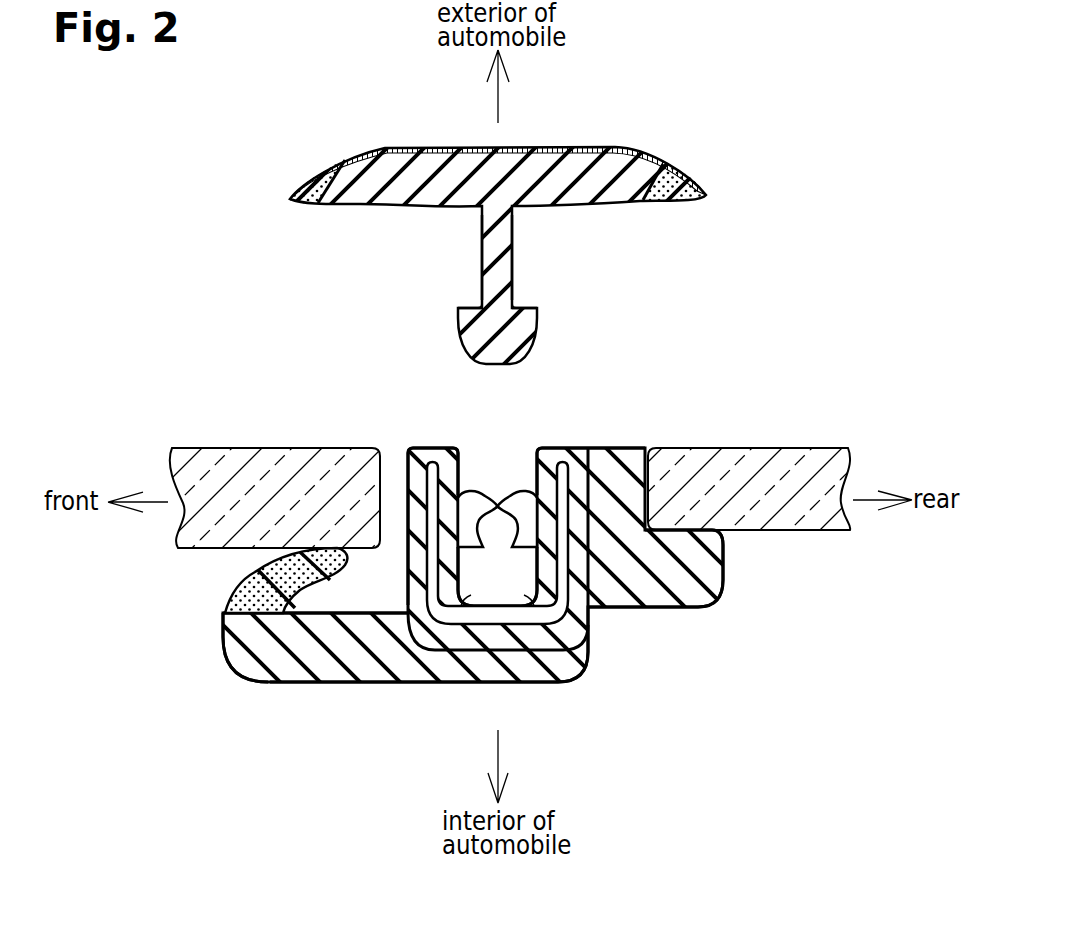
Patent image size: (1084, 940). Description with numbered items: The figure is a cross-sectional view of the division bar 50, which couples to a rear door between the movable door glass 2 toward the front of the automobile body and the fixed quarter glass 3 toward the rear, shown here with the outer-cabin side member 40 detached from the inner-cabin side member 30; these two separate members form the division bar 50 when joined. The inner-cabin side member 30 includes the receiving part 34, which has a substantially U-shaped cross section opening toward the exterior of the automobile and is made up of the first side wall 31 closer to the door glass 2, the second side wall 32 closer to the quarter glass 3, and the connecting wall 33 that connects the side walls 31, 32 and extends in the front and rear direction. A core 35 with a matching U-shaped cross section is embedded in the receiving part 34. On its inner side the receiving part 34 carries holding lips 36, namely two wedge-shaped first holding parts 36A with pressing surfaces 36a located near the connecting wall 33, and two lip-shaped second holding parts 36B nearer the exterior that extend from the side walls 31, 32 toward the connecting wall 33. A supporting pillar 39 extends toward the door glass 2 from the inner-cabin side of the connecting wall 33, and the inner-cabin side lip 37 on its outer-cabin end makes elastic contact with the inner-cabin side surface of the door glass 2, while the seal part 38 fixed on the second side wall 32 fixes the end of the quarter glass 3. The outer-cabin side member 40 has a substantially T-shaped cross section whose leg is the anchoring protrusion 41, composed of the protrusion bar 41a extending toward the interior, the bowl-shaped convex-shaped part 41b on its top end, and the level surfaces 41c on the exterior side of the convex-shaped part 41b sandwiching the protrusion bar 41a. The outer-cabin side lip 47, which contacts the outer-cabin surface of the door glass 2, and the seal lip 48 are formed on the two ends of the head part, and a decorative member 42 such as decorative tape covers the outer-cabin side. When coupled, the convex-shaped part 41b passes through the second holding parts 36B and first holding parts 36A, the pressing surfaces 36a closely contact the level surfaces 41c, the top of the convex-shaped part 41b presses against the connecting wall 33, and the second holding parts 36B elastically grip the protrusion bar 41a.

The door glass 2 is at (217, 447).
The quarter glass 3 is at (805, 448).
The inner-cabin side member 30 is at (645, 634).
The first side wall 31 is at (413, 553).
The second side wall 32 is at (575, 462).
The connecting wall 33 is at (508, 642).
The receiving part 34 is at (398, 640).
The core 35 is at (478, 630).
The holding lips 36 is at (523, 593).
The first holding parts 36A is at (437, 626).
The second holding parts 36B is at (495, 500).
The pressing surfaces 36a is at (443, 617).
The inner-cabin side lip 37 is at (240, 583).
The seal part 38 is at (703, 583).
The supporting pillar 39 is at (310, 662).
The outer-cabin side member 40 is at (623, 125).
The anchoring protrusion 41 is at (498, 255).
The protrusion bar 41a is at (500, 238).
The convex-shaped part 41b is at (517, 337).
The level surfaces 41c is at (472, 308).
The decorative member 42 is at (527, 145).
The outer-cabin side lip 47 is at (303, 183).
The seal lip 48 is at (680, 178).
The division bar 50 is at (776, 247).